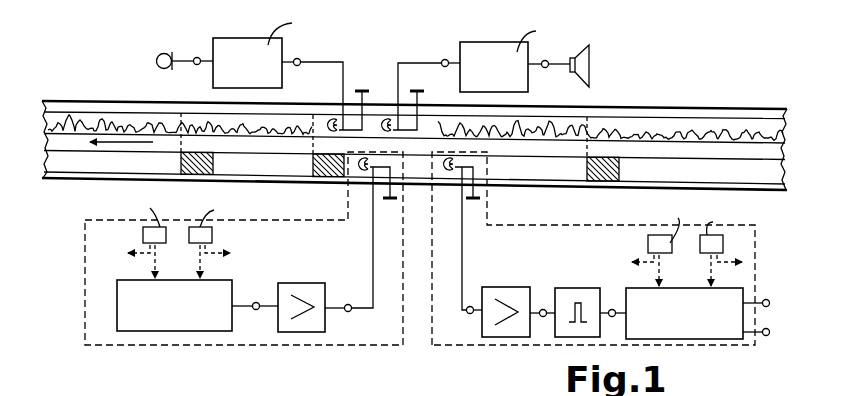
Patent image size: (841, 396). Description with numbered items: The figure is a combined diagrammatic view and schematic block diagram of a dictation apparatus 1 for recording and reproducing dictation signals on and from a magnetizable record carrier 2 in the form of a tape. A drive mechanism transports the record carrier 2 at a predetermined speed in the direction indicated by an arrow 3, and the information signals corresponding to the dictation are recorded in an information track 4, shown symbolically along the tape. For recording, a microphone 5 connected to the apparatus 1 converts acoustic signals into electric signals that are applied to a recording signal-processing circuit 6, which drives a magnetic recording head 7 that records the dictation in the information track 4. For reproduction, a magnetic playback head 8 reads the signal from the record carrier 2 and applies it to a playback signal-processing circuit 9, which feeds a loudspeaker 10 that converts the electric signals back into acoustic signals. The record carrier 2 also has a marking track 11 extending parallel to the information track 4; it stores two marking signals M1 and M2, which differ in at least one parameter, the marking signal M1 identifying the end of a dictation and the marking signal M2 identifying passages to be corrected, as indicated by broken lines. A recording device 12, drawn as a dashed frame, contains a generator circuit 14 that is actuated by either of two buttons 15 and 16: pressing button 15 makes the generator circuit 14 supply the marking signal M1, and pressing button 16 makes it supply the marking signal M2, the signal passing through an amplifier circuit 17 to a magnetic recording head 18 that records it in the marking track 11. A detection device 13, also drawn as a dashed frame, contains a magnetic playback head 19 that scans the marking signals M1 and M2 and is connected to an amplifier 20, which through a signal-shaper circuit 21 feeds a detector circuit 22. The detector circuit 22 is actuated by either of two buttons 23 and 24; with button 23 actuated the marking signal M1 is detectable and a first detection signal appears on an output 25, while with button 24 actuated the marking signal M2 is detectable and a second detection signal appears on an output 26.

The apparatus 1 is at (94, 52).
The record carrier 2 is at (73, 102).
The arrow 3 is at (118, 144).
The information track 4 is at (118, 116).
The microphone 5 is at (166, 52).
The recording signal-processing circuit 6 is at (245, 48).
The magnetic recording head 7 is at (320, 124).
The magnetic playback head 8 is at (378, 121).
The playback signal-processing circuit 9 is at (490, 50).
The loudspeaker 10 is at (582, 73).
The marking track 11 is at (56, 171).
The recording device 12 is at (322, 348).
The detection device 13 is at (496, 349).
The generator circuit 14 is at (122, 290).
The button 15 is at (143, 233).
The button 16 is at (212, 233).
The amplifier circuit 17 is at (305, 290).
The magnetic recording head 18 is at (361, 172).
The magnetic playback head 19 is at (446, 172).
The amplifier 20 is at (505, 289).
The signal-shaper circuit 21 is at (571, 290).
The detector circuit 22 is at (640, 296).
The button 23 is at (648, 243).
The button 24 is at (723, 243).
The output 25 is at (768, 299).
The output 26 is at (768, 336).
The marking signal M1 is at (333, 177).
The marking signal M2 is at (217, 175).